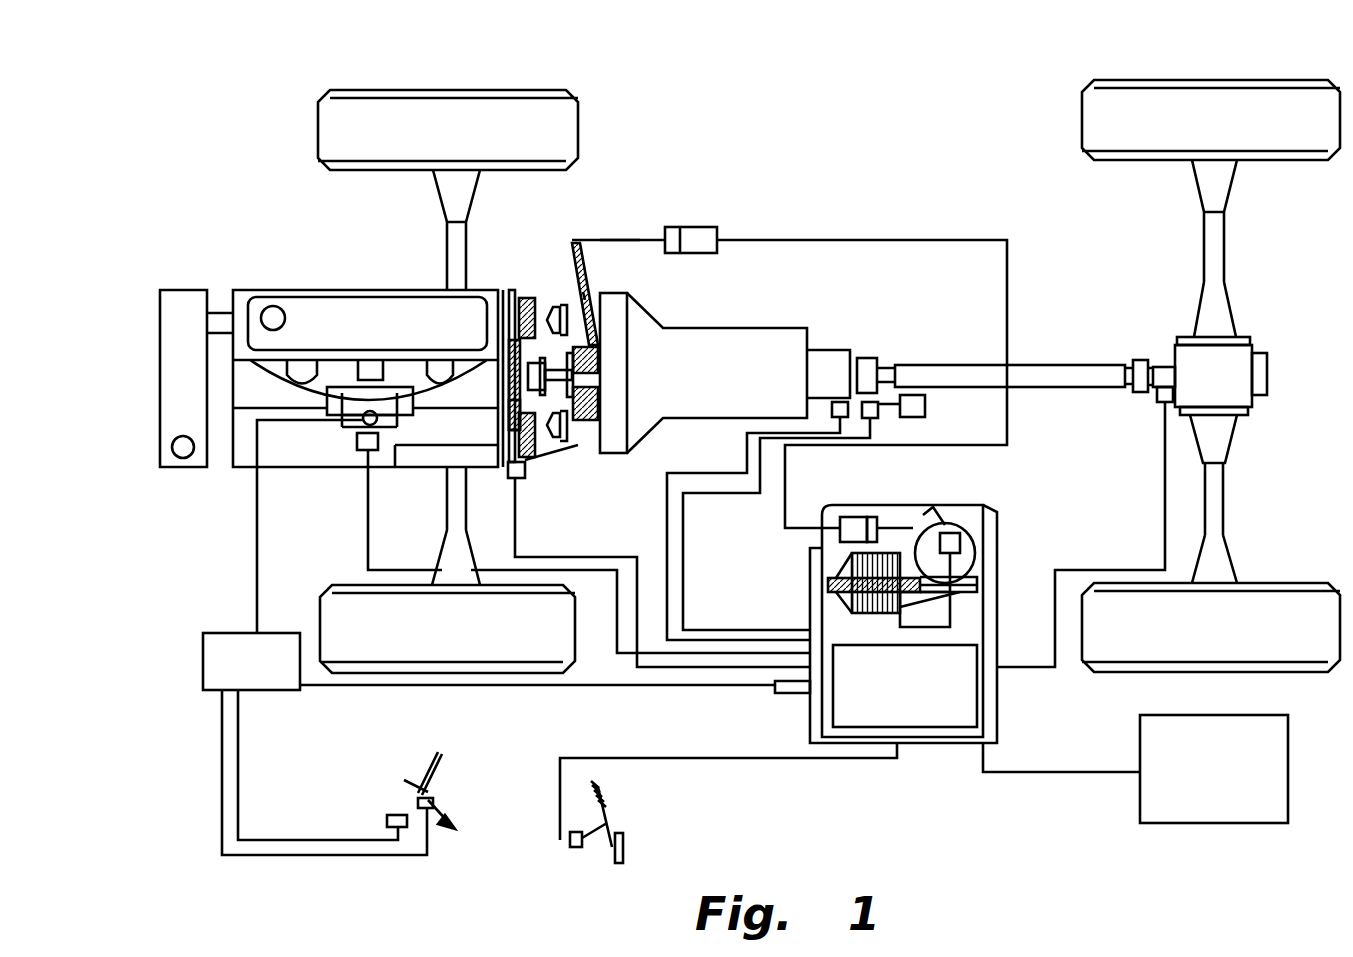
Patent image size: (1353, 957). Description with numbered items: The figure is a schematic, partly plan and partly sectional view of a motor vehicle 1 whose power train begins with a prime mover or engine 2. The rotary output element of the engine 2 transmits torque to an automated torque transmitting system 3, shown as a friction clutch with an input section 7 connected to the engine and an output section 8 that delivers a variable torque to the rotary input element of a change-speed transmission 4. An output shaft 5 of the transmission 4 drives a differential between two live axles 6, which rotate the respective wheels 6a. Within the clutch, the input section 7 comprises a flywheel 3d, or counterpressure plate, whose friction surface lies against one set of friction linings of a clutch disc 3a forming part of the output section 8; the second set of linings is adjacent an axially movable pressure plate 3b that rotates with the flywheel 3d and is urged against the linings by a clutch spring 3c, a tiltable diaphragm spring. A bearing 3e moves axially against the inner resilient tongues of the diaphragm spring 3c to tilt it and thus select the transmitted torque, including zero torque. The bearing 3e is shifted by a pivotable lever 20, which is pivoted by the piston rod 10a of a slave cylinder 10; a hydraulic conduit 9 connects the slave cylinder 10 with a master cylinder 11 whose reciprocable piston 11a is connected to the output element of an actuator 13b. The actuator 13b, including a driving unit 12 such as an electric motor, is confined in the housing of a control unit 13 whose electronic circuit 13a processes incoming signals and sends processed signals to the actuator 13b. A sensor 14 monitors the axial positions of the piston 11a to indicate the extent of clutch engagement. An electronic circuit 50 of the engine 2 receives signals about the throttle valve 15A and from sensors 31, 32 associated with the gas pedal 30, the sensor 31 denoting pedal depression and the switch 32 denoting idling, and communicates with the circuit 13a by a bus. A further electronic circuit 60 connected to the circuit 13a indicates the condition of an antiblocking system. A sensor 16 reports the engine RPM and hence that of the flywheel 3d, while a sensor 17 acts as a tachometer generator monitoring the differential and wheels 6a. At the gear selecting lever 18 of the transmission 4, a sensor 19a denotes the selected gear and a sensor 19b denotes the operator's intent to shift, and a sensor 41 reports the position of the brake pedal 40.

The motor vehicle 1 is at (836, 176).
The prime mover 2 is at (300, 305).
The automated torque transmitting system 3 is at (540, 300).
The clutch disc 3a is at (570, 418).
The pressure plate 3b is at (555, 302).
The clutch spring 3c is at (583, 292).
The flywheel 3d is at (527, 455).
The bearing 3e is at (577, 420).
The change-speed transmission 4 is at (723, 383).
The output shaft 5 is at (1073, 373).
The live axles 6 is at (1217, 500).
The wheels 6a is at (1133, 128).
The input section 7 is at (500, 293).
The output section 8 is at (600, 297).
The conduit 9 is at (920, 237).
The slave cylinder 10 is at (695, 227).
The piston rod 10a is at (630, 240).
The master cylinder 11 is at (848, 518).
The piston 11a is at (867, 515).
The driving unit 12 is at (850, 603).
The control unit 13 is at (998, 605).
The electronic circuit 13a is at (922, 700).
The actuator 13b is at (968, 510).
The sensor 14 is at (960, 543).
The throttle valve 15A is at (347, 393).
The sensor 16 is at (507, 478).
The sensor 17 is at (1158, 395).
The gear selecting lever 18 is at (925, 403).
The sensor 19a is at (835, 402).
The sensor 19b is at (878, 413).
The lever 20 is at (578, 235).
The gas pedal 30 is at (425, 773).
The sensor 31 is at (388, 818).
The sensor 32 is at (440, 777).
The brake pedal 40 is at (623, 845).
The sensor 41 is at (572, 847).
The electronic circuit 50 is at (223, 647).
The electronic circuit 60 is at (1235, 783).